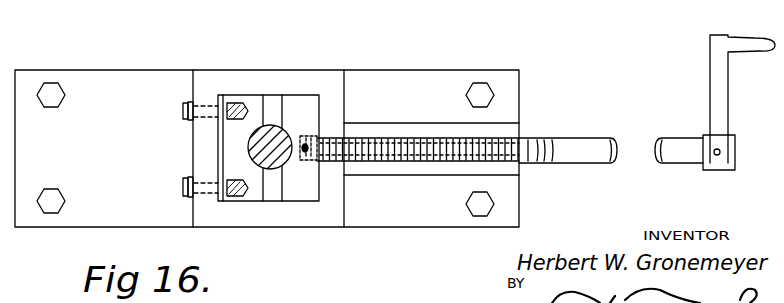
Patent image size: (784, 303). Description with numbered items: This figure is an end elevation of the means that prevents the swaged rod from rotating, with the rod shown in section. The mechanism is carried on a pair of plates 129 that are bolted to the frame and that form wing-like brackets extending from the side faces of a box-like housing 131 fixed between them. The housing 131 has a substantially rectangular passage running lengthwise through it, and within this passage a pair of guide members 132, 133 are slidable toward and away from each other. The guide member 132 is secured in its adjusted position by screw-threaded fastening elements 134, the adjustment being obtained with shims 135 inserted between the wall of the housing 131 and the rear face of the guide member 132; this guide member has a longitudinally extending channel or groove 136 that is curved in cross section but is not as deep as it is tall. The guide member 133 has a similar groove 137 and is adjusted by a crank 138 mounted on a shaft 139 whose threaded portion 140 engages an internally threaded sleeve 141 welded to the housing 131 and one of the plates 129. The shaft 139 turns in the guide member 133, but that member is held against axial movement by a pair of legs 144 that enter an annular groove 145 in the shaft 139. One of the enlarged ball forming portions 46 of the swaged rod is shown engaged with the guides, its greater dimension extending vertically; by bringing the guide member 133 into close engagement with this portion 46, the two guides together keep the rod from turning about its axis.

The plates 129 is at (110, 92).
The guide member 132 is at (250, 105).
The channel or groove 136 is at (255, 125).
The box-like housing 131 is at (300, 78).
The guide member 133 is at (302, 134).
The annular groove 145 is at (319, 112).
The internally threaded sleeve 141 is at (492, 127).
The threaded portion 140 is at (535, 137).
The shaft 139 is at (577, 146).
The crank 138 is at (716, 72).
The screw-threaded fastening elements 134 is at (182, 110).
The shims 135 is at (227, 138).
The ball forming portions 46 is at (262, 171).
The groove 137 is at (304, 168).
The legs 144 is at (323, 127).